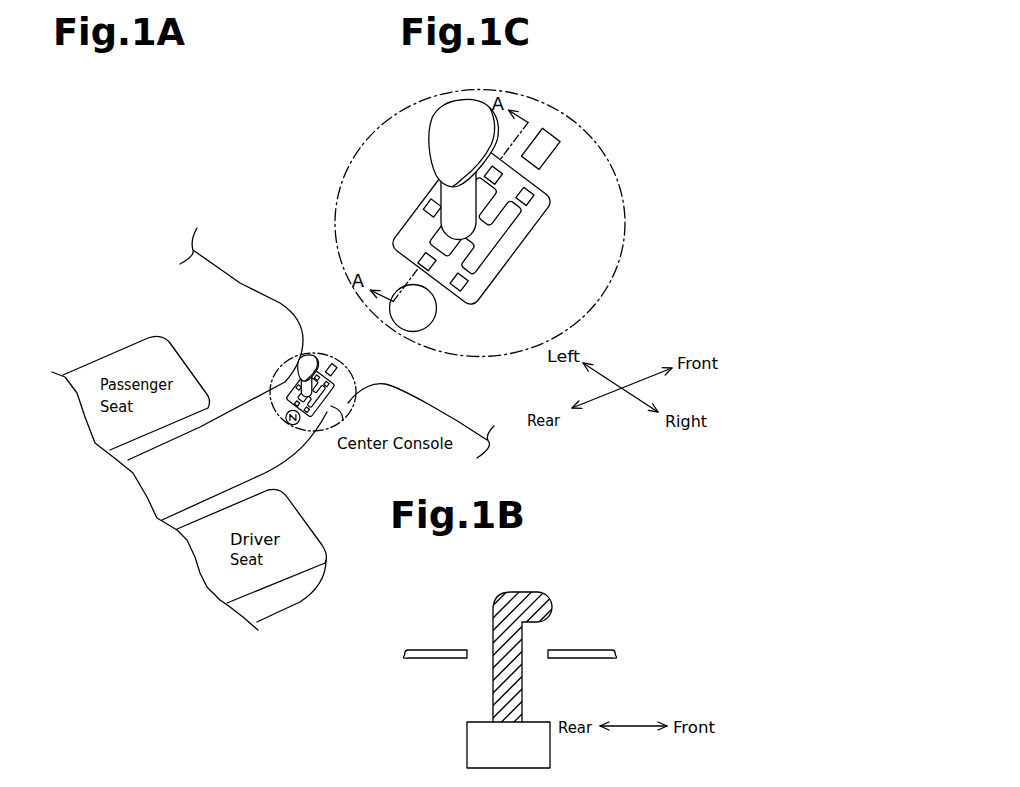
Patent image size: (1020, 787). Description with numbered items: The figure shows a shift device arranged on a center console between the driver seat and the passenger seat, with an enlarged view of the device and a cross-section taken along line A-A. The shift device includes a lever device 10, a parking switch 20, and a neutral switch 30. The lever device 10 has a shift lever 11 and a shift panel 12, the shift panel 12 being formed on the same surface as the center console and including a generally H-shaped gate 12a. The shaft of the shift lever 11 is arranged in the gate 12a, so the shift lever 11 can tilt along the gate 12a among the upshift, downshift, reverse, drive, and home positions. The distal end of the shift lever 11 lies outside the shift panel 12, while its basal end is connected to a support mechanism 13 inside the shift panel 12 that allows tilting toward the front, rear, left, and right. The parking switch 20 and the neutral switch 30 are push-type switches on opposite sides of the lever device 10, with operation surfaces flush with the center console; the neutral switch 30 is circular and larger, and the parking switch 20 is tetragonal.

In FIG. 1A, the lever device 10 is at (308, 355).
In FIG. 1C, the lever device 10 is at (423, 169).
In FIG. 1B, the lever device 10 is at (607, 563).
In FIG. 1C, the shift lever 11 is at (462, 100).
In FIG. 1B, the shift lever 11 is at (538, 591).
In FIG. 1C, the shift panel 12 is at (478, 222).
In FIG. 1B, the shift panel 12 is at (437, 649).
In FIG. 1C, the gate 12a is at (494, 257).
In FIG. 1B, the gate 12a is at (549, 649).
In FIG. 1B, the support mechanism 13 is at (467, 744).
In FIG. 1A, the parking switch 20 is at (343, 369).
In FIG. 1C, the parking switch 20 is at (560, 151).
In FIG. 1A, the neutral switch 30 is at (298, 427).
In FIG. 1C, the neutral switch 30 is at (436, 311).